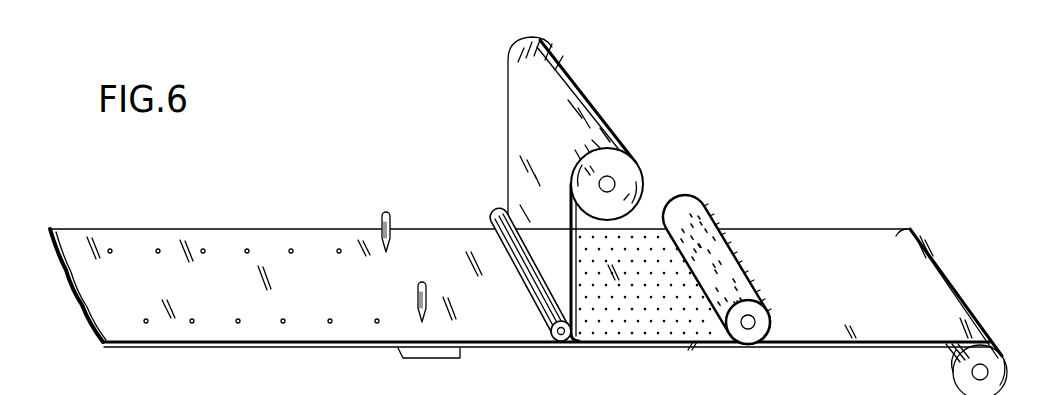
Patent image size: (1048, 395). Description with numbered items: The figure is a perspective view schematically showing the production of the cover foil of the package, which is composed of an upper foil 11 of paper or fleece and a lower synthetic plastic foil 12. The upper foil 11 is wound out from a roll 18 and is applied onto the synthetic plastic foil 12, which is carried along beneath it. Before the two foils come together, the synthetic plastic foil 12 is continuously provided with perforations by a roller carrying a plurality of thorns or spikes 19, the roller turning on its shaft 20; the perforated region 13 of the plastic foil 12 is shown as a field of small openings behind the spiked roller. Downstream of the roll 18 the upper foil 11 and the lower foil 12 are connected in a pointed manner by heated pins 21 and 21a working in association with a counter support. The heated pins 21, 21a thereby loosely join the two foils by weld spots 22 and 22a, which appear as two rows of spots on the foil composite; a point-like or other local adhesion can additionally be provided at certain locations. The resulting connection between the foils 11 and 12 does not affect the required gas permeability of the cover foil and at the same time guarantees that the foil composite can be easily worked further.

The foil of paper or fleece 11 is at (522, 142).
The synthetic plastic foil 12 is at (826, 336).
The adhesive / granular layer 13 is at (658, 296).
The roll 18 is at (628, 172).
The thorns or spikes 19 is at (716, 207).
The roller shaft 20 is at (759, 315).
The heated pin 21 is at (391, 214).
The heated pin 21a is at (429, 297).
The weld spots 22 is at (247, 250).
The perforation row 22a is at (283, 321).